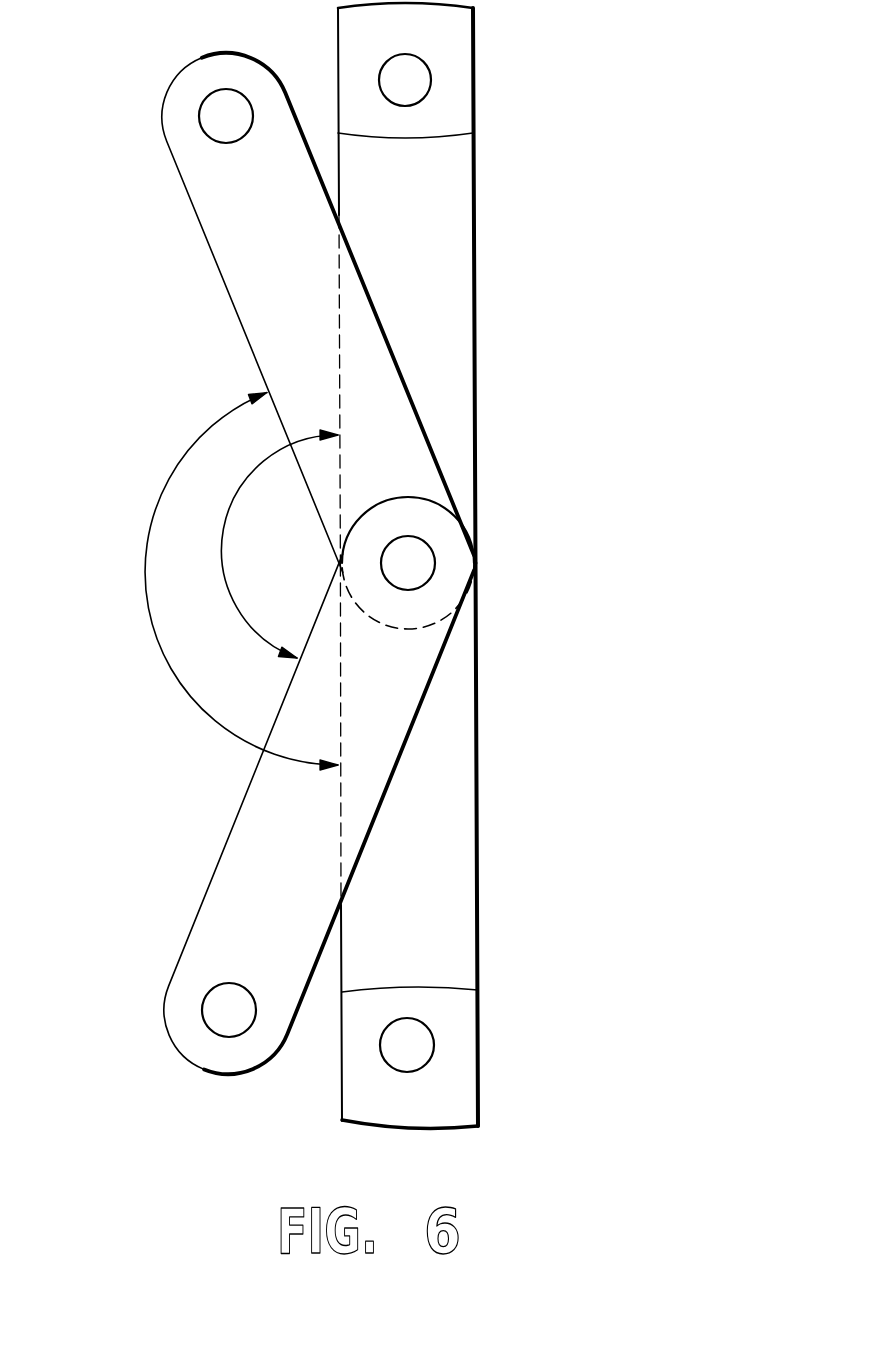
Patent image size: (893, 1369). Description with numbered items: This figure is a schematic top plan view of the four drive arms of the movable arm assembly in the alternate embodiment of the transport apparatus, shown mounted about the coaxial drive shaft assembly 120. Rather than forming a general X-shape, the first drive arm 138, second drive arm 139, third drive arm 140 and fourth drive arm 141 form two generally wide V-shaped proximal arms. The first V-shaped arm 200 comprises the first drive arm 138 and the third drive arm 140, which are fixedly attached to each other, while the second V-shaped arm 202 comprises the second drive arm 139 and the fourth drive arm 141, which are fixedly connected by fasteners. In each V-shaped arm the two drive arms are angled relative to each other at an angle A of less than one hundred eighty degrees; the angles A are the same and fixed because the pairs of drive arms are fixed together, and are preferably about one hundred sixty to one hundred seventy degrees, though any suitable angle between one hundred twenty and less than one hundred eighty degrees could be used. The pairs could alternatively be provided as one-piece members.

The coaxial drive shaft assembly 120 is at (412, 561).
The first drive arm 138 is at (220, 853).
The second drive arm 139 is at (215, 261).
The third drive arm 140 is at (478, 242).
The fourth drive arm 141 is at (477, 940).
The first V-shaped arm 200 is at (192, 925).
The second V-shaped arm 202 is at (175, 163).
The angle A is at (145, 585).